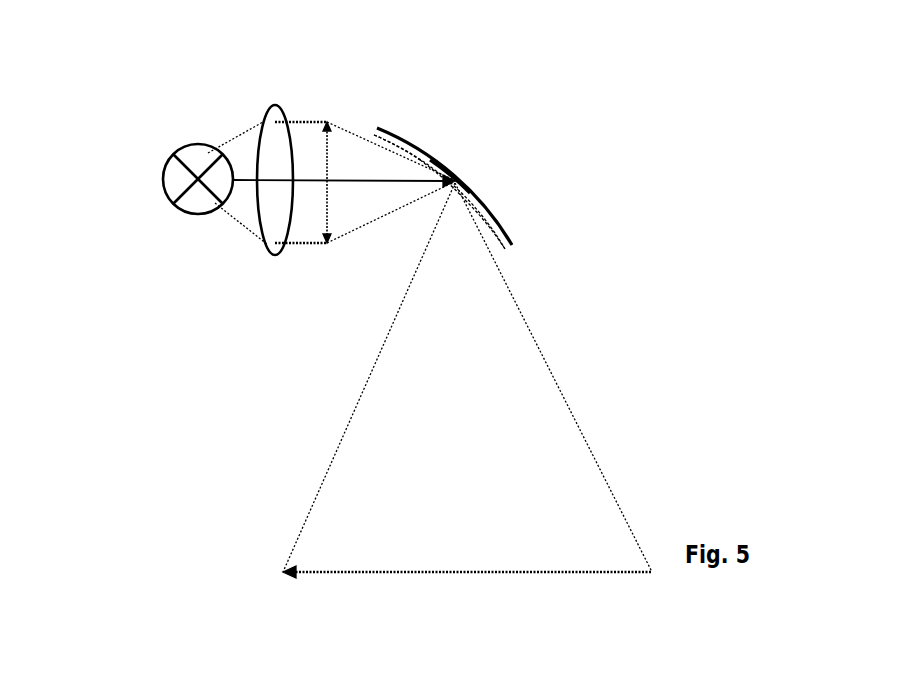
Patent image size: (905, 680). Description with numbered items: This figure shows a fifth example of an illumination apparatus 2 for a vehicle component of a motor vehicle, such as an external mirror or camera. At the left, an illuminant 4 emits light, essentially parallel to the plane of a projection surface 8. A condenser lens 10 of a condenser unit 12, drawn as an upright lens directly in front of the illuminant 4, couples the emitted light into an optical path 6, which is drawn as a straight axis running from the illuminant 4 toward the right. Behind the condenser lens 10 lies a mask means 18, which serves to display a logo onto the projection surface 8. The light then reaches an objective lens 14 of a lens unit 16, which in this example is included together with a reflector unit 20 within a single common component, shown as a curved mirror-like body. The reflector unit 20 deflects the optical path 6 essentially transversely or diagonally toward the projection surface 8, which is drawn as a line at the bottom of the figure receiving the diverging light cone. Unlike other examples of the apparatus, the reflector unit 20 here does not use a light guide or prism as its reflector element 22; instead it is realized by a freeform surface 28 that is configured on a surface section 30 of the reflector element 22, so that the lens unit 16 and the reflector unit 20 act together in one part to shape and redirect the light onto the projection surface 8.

The illumination apparatus 2 is at (132, 251).
The illuminant 4 is at (163, 180).
The optical path 6 is at (343, 178).
The projection surface 8 is at (517, 575).
The condenser lens 10 is at (277, 107).
The condenser unit 12 is at (263, 266).
The objective lens 14 is at (450, 173).
The lens unit 16 is at (545, 167).
The mask means 18 is at (325, 200).
The reflector unit 20 is at (508, 233).
The reflector element 22 is at (540, 174).
The freeform surface 28 is at (583, 187).
The surface section 30 is at (624, 217).